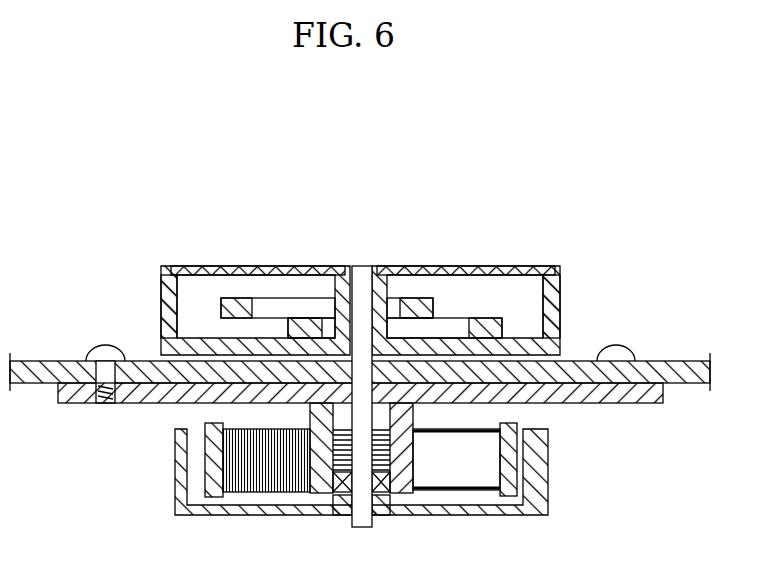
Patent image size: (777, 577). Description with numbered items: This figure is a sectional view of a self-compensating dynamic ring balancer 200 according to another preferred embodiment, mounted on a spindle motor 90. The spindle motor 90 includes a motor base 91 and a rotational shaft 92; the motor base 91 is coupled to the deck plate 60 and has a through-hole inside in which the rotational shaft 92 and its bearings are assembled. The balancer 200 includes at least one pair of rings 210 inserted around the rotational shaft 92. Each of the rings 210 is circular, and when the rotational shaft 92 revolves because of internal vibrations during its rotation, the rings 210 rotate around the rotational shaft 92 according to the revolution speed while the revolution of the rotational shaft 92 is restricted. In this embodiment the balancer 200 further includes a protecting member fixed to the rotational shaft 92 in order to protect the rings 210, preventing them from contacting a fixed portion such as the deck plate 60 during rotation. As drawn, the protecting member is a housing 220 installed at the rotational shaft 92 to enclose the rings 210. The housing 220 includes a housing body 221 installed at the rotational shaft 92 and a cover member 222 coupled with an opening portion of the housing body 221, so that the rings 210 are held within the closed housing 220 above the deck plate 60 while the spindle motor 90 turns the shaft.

The deck plate 60 is at (686, 361).
The motor base 91 is at (632, 392).
The spindle motor 90 is at (554, 481).
The rotational shaft 92 is at (363, 266).
The self-compensating dynamic ring balancer 200 is at (399, 259).
The rings 210 is at (493, 318).
The housing 220 is at (563, 326).
The housing body 221 is at (561, 295).
The cover member 222 is at (465, 266).